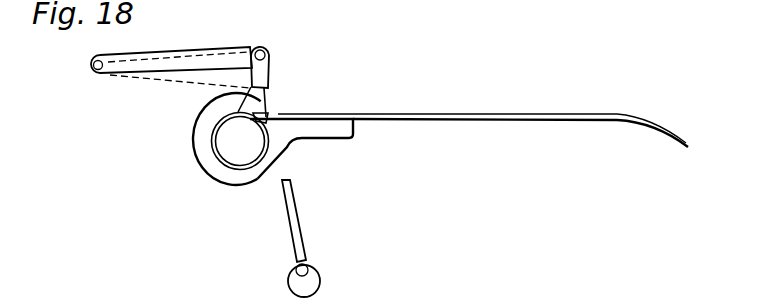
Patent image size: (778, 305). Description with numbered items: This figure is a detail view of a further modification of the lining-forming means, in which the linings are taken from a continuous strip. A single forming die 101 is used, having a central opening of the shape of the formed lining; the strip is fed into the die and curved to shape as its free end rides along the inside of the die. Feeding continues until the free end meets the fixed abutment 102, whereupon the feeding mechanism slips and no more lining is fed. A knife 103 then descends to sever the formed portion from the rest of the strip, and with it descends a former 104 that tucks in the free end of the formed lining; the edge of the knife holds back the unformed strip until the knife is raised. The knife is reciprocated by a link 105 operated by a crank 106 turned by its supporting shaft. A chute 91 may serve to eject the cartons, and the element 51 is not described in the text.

The roller pin 51 is at (240, 141).
The chute 91 is at (531, 130).
The forming die 101 is at (270, 150).
The fixed abutment 102 is at (264, 120).
The knife 103 is at (268, 90).
The former 104 is at (246, 48).
The link 105 is at (303, 233).
The crank 106 is at (319, 284).